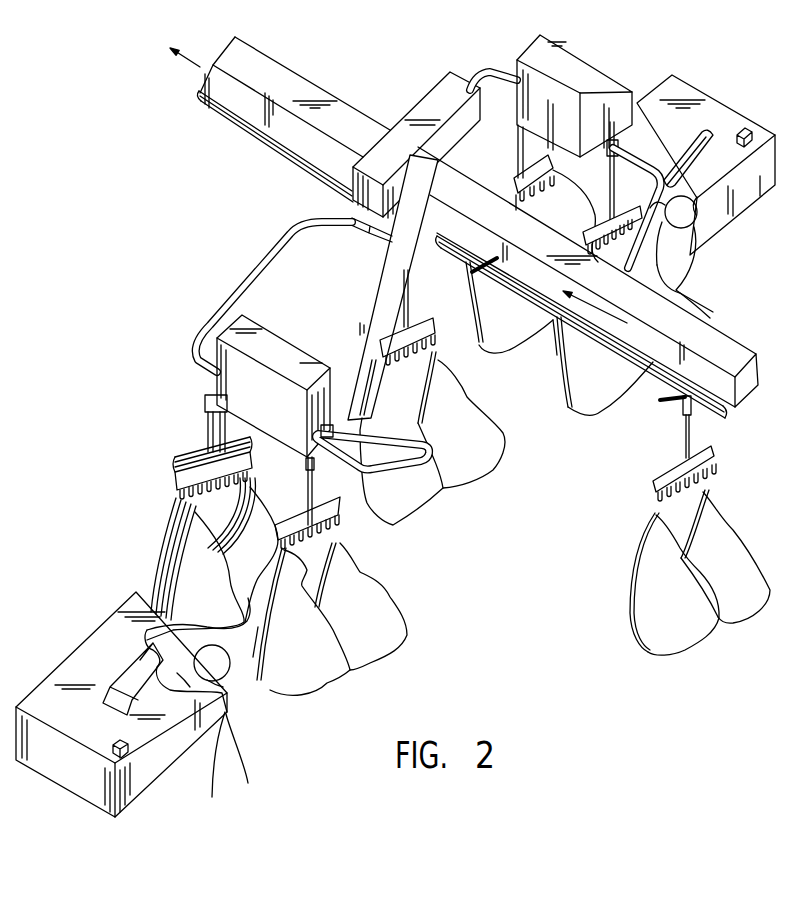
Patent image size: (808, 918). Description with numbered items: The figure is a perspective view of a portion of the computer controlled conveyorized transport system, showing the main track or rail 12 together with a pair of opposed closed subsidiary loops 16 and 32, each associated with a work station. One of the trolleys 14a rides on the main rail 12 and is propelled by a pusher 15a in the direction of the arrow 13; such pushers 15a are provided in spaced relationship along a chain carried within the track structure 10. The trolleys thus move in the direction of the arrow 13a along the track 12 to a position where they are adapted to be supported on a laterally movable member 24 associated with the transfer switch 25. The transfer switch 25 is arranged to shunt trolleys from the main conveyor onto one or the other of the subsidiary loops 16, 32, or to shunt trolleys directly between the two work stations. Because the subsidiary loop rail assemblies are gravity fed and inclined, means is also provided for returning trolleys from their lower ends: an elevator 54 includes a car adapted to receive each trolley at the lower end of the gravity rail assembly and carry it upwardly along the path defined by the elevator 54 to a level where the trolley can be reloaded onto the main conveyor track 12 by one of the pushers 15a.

The track structure 10 is at (352, 115).
The main track or rail 12 is at (260, 131).
The arrow 13 is at (628, 322).
The arrow 13a is at (190, 61).
The trolley 14a is at (690, 434).
The pusher 15a is at (673, 405).
The subsidiary loop 16 is at (240, 267).
The laterally movable member 24 is at (375, 237).
The transfer switch 25 is at (417, 97).
The subsidiary loop 32 is at (710, 264).
The elevator 54 is at (370, 287).